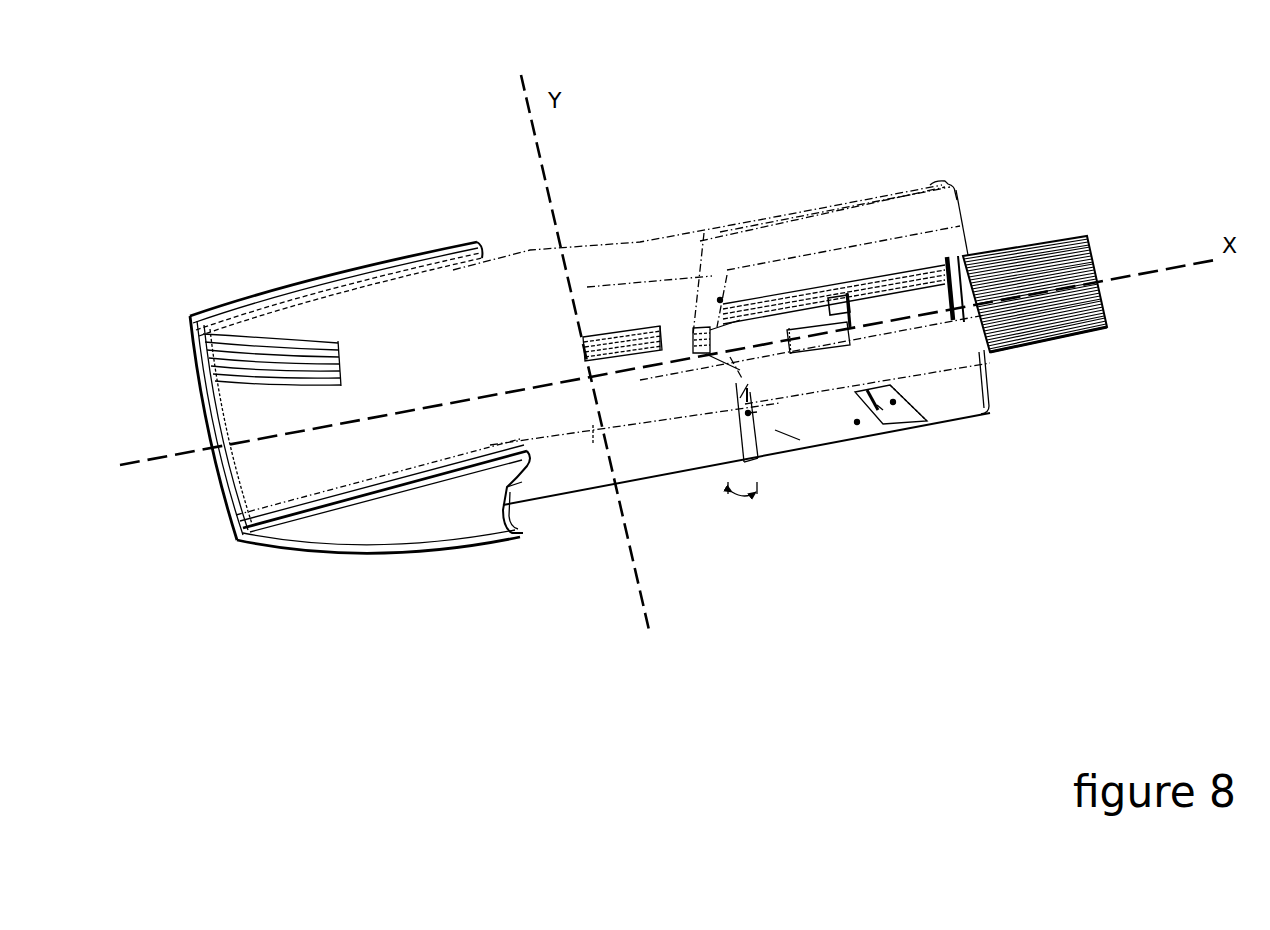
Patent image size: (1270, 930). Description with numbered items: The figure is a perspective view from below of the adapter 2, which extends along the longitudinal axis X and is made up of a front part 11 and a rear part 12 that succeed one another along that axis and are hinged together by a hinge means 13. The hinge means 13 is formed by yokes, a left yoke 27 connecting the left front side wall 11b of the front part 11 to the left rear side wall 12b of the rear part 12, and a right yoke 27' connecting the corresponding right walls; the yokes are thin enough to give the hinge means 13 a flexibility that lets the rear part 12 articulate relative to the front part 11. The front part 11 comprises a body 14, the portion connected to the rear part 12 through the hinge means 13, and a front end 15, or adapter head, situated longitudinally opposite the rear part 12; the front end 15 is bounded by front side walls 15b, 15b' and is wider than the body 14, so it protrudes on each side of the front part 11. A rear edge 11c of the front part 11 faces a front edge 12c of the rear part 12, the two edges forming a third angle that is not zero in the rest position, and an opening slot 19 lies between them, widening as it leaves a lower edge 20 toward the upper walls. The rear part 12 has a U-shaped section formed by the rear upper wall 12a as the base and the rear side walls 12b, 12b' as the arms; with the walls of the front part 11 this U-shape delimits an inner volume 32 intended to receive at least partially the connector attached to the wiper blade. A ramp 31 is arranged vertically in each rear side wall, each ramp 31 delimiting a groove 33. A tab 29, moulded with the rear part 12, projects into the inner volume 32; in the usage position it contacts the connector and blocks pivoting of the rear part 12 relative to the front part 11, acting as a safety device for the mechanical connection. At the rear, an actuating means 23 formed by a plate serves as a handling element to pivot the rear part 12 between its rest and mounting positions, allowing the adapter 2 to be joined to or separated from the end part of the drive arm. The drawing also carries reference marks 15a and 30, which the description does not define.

The adapter 2 is at (768, 632).
The front part 11 is at (417, 163).
The left front side wall 11b is at (684, 460).
The rear edge 11c is at (740, 447).
The rear part 12 is at (863, 177).
The rear upper wall 12a is at (990, 352).
The left rear side wall 12b is at (957, 456).
The right rear side wall 12b' is at (979, 139).
The front edge 12c is at (722, 297).
The hinge means 13 is at (737, 203).
The body 14 is at (598, 223).
The front end 15 is at (227, 257).
The hub inner wall 15a is at (306, 486).
The front side wall of the front end 15b is at (378, 603).
The front side wall of the front end 15b' is at (276, 253).
The opening slot 19 is at (748, 460).
The lower edge 20 is at (676, 237).
The actuating means 23 is at (1073, 257).
The left yoke 27 is at (815, 453).
The right yoke 27' is at (712, 260).
The tab 29 is at (693, 343).
The bevel 30 is at (150, 358).
The ramp 31 is at (830, 305).
The inner volume 32 is at (973, 298).
The groove 33 is at (893, 402).